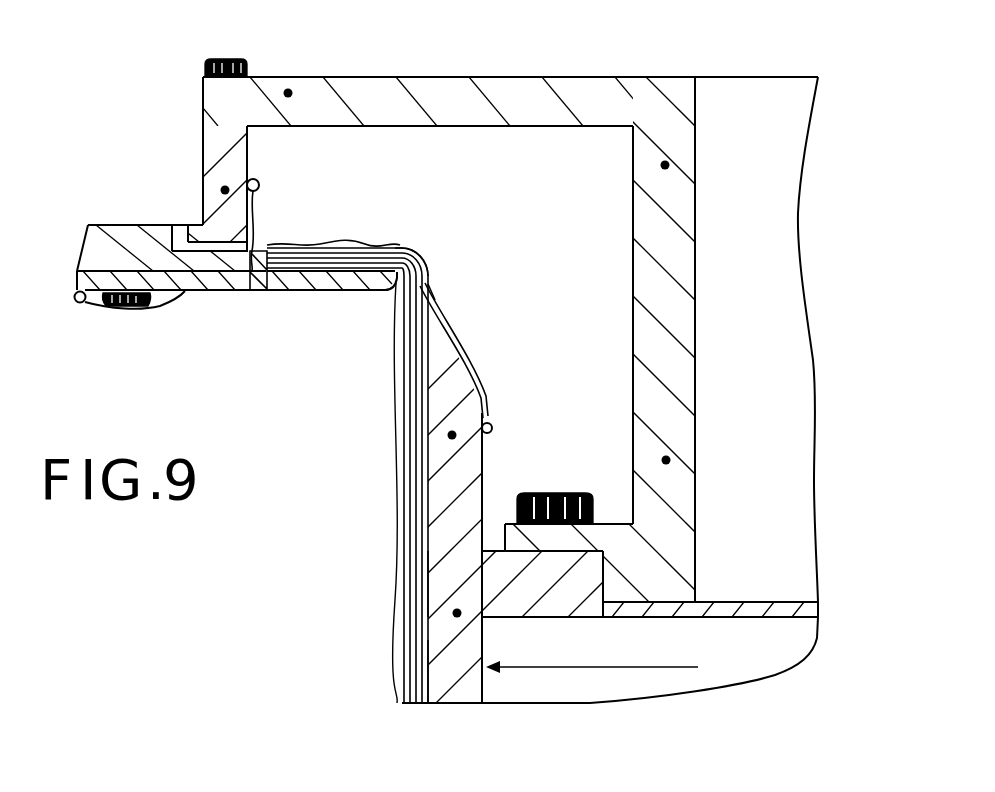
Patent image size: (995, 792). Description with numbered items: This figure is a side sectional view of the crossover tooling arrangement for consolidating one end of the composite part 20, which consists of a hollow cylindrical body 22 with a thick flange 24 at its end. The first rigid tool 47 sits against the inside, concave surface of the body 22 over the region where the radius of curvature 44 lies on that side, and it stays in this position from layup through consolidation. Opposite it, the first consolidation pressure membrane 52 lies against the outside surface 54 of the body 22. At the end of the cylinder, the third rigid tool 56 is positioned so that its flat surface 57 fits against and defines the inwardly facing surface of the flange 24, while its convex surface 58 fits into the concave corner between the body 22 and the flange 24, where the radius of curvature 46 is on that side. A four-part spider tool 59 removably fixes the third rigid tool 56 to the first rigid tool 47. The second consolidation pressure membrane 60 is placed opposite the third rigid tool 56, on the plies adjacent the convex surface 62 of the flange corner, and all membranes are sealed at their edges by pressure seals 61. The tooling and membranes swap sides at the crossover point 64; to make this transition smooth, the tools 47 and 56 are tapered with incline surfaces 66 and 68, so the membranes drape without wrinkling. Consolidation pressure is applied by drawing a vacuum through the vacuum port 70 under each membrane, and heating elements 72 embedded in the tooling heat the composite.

The part 20 is at (410, 508).
The hollow cylindrical body 22 is at (428, 660).
The flange 24 is at (298, 244).
The radius of curvature 44 is at (659, 665).
The radius of curvature 46 is at (426, 258).
The first rigid tool 47 is at (484, 473).
The first consolidation pressure membrane 52 is at (405, 656).
The outside surface 54 is at (405, 578).
The third rigid tool 56 is at (264, 292).
The flat surface 57 is at (300, 273).
The convex surface 58 is at (393, 289).
The four-part spider tool 59 is at (554, 90).
The second consolidation pressure membrane 60 is at (432, 267).
The pressure seals 61 is at (258, 182).
The convex surface 62 is at (396, 248).
The crossover point 64 is at (434, 300).
The incline surface 66 is at (465, 363).
The incline surface 68 is at (397, 302).
The vacuum port 70 is at (163, 228).
The heating elements 72 is at (289, 90).